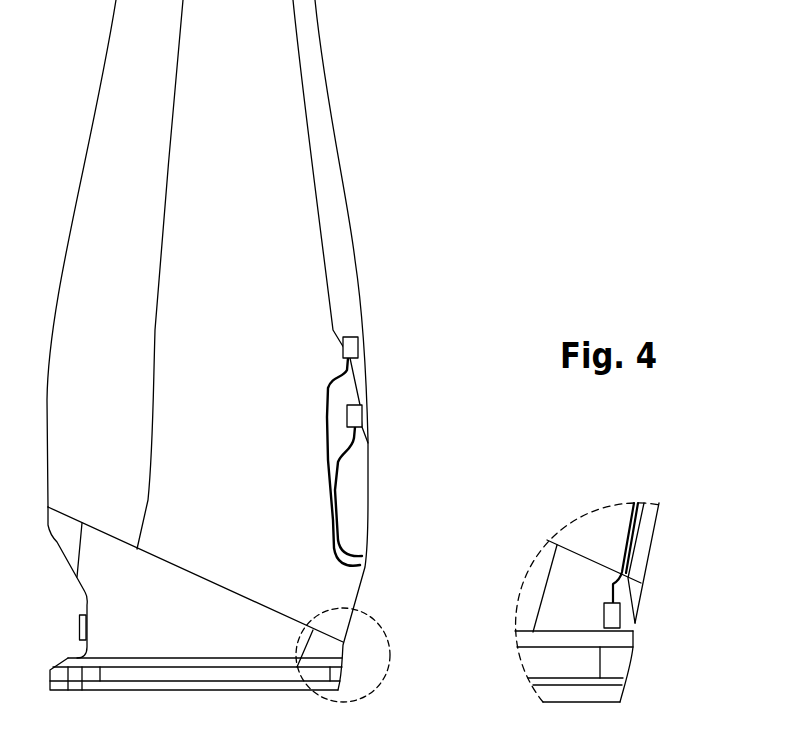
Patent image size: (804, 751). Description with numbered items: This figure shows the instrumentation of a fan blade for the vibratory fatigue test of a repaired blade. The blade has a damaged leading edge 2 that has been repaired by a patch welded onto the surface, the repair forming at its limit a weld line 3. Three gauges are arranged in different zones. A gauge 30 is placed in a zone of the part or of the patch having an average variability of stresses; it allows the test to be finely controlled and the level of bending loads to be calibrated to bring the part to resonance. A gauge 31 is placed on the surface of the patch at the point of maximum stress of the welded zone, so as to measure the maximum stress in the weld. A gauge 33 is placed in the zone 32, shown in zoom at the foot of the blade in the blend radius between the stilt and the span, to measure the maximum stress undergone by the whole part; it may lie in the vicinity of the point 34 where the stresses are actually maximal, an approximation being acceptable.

The leading edge 2 is at (353, 196).
The weld line 3 is at (303, 73).
The gauge 30 is at (358, 347).
The gauge 31 is at (362, 417).
The zone 32 is at (396, 615).
The gauge 33 is at (614, 616).
The point 34 is at (613, 640).